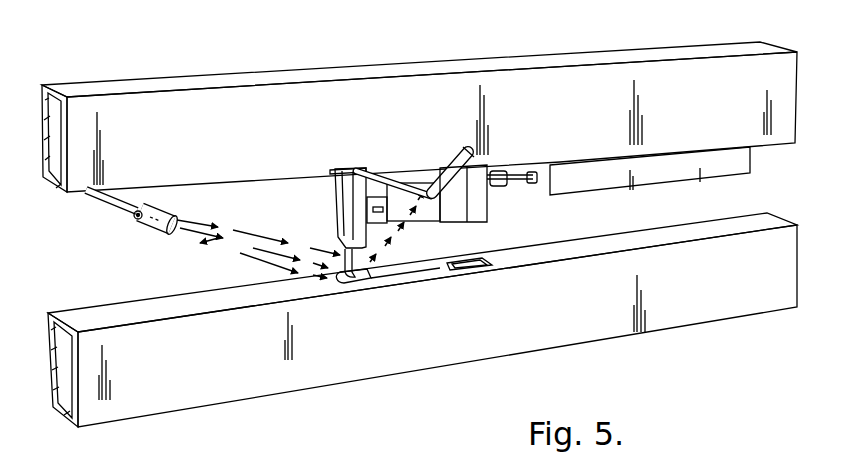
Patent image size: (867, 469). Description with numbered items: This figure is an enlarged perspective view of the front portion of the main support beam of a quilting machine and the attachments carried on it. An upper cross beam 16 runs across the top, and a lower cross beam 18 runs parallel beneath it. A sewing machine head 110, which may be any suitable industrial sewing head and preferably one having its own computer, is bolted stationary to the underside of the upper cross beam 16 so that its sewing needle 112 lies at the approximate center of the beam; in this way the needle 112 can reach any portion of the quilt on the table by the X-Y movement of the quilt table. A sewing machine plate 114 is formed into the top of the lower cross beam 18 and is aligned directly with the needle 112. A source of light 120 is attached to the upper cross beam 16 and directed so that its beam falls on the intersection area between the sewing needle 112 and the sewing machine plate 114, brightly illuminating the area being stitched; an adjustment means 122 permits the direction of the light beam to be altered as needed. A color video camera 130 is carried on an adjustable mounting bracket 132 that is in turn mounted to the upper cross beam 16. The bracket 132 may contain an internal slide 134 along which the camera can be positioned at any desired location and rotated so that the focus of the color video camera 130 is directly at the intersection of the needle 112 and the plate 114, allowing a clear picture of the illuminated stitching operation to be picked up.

The upper cross beam 16 is at (308, 93).
The lower cross beam 18 is at (743, 293).
The sewing machine head 110 is at (332, 213).
The sewing needle 112 is at (324, 282).
The sewing machine plate 114 is at (370, 287).
The source of light 120 is at (162, 208).
The adjustment means 122 is at (128, 218).
The color video camera 130 is at (470, 218).
The adjustable mounting bracket 132 is at (383, 172).
The internal slide 134 is at (408, 182).